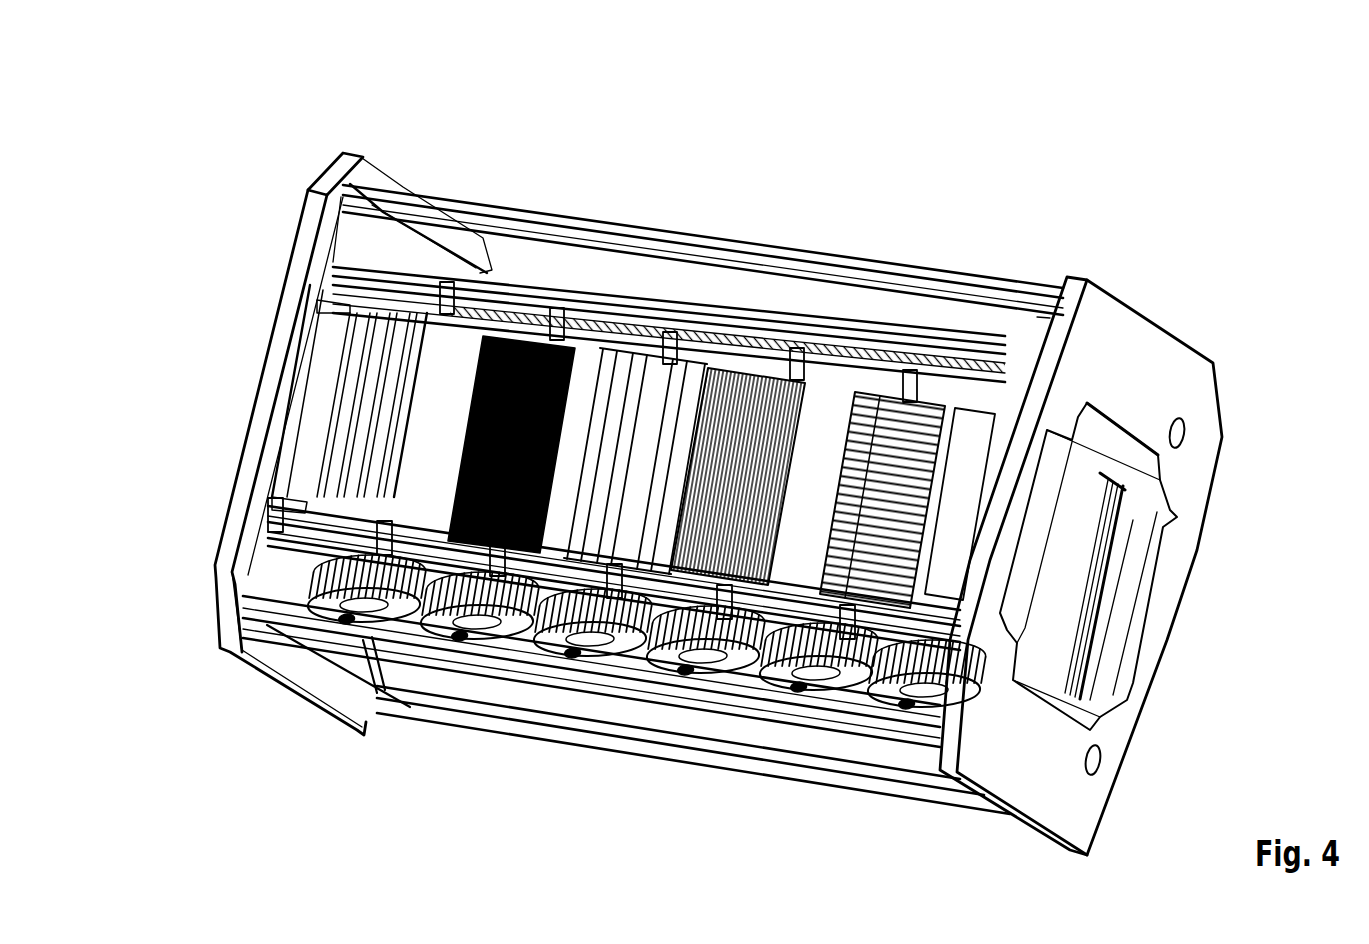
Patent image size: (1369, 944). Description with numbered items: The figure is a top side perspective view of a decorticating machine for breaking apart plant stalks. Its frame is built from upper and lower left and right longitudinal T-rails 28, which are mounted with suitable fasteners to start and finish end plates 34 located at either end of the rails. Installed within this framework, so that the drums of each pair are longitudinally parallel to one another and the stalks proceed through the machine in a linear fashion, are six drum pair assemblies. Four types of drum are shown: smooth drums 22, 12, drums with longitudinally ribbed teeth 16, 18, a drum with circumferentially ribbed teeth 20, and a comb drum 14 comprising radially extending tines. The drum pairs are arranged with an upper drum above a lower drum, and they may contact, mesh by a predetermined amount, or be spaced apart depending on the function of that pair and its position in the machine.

The smooth drum 12 is at (423, 403).
The comb drum 14 is at (545, 337).
The longitudinally ribbed teeth drum 16 is at (667, 413).
The longitudinally ribbed teeth drum 18 is at (777, 422).
The circumferentially ribbed teeth drum 20 is at (890, 450).
The smooth drum 22 is at (987, 452).
The longitudinal T-rail 28 is at (415, 288).
The end plate 34 is at (1108, 325).